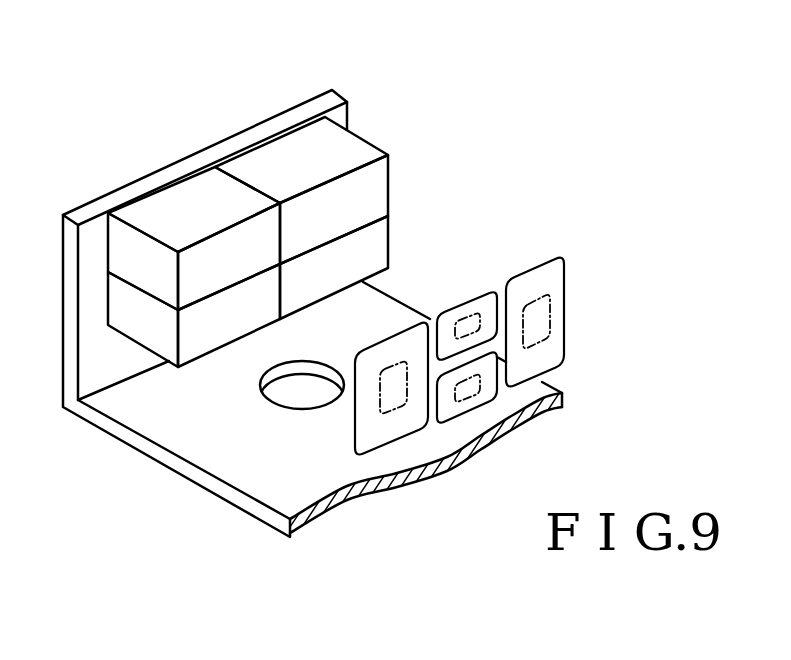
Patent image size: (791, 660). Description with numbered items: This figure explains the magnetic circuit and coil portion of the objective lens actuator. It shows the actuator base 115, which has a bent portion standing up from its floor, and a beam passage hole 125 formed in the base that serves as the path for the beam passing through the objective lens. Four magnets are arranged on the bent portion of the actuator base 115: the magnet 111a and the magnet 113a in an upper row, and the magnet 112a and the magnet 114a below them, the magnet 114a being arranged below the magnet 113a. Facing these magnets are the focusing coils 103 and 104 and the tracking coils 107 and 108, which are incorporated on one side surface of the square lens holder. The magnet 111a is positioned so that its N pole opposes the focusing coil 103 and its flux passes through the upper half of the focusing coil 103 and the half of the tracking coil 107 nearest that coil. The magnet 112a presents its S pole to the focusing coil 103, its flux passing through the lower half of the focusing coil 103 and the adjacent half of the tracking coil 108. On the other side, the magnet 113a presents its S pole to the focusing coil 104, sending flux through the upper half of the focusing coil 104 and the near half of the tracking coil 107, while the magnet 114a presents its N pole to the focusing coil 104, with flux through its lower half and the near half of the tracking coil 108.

The focusing coil 103 is at (392, 335).
The focusing coil 104 is at (527, 272).
The tracking coil 107 is at (458, 303).
The tracking coil 108 is at (475, 410).
The magnet 111a is at (175, 205).
The magnet 112a is at (150, 332).
The magnet 113a is at (290, 158).
The magnet 114a is at (366, 243).
The actuator base 115 is at (227, 425).
The beam passage hole 125 is at (308, 409).